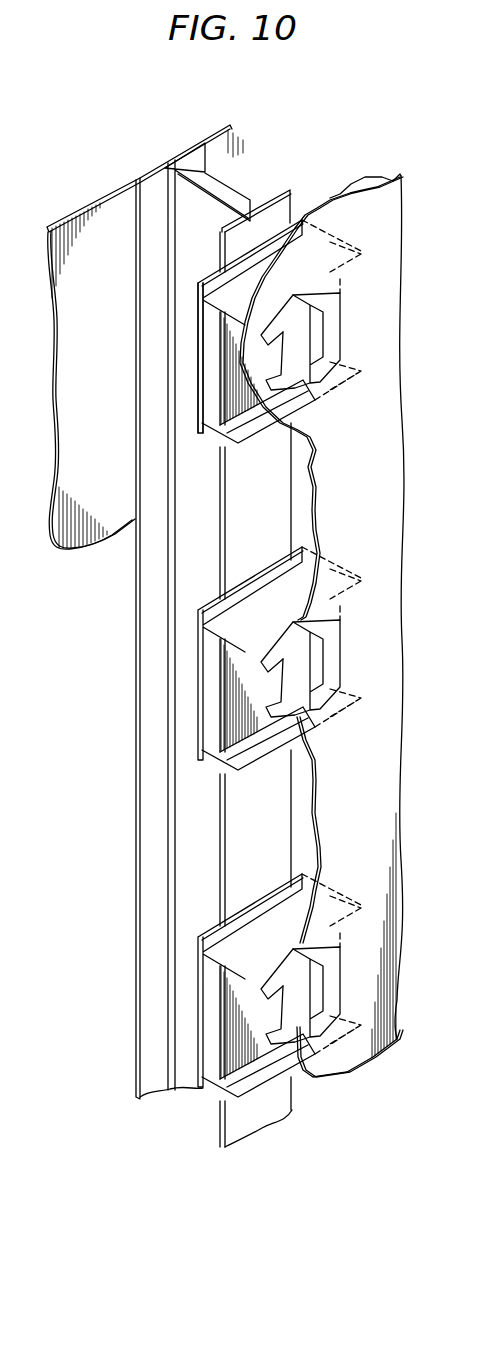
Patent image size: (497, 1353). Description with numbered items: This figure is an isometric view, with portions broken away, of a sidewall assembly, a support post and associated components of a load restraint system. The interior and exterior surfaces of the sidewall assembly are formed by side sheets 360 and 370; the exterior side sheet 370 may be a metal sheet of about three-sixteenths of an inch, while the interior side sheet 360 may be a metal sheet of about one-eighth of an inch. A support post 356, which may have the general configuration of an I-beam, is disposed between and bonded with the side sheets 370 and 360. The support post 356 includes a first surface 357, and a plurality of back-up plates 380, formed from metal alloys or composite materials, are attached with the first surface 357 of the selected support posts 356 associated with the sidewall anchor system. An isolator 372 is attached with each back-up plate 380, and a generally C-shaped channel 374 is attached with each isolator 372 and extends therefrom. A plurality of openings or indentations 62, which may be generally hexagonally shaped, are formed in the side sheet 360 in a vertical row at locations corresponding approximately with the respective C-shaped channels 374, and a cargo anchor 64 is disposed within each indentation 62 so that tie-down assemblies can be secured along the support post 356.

The indentation 62 is at (324, 345).
The cargo anchor 64 is at (338, 314).
The support post 356 is at (224, 196).
The first surface 357 is at (286, 212).
The side sheet 360 is at (386, 557).
The side sheet 370 is at (83, 207).
The isolator 372 is at (211, 342).
The C-shaped channel 374 is at (260, 432).
The back-up plate 380 is at (215, 292).